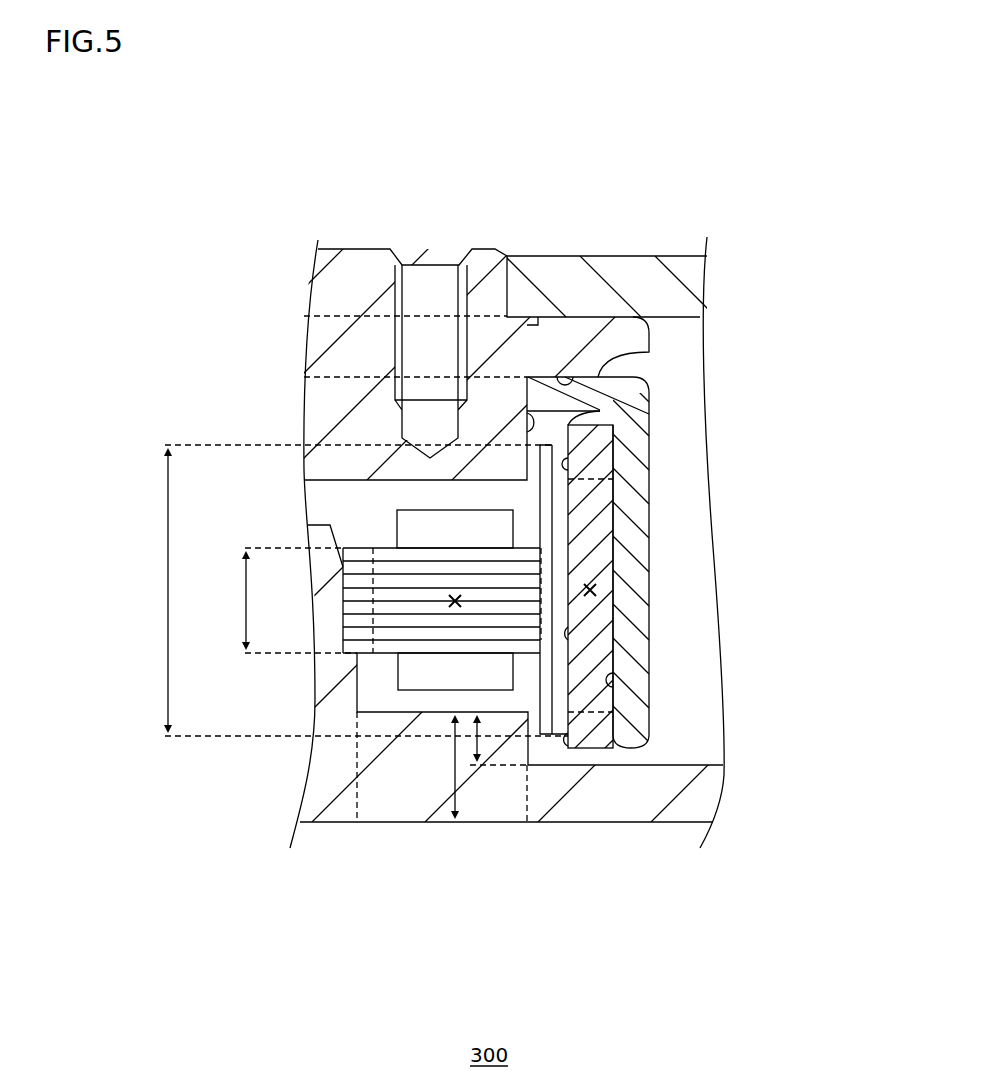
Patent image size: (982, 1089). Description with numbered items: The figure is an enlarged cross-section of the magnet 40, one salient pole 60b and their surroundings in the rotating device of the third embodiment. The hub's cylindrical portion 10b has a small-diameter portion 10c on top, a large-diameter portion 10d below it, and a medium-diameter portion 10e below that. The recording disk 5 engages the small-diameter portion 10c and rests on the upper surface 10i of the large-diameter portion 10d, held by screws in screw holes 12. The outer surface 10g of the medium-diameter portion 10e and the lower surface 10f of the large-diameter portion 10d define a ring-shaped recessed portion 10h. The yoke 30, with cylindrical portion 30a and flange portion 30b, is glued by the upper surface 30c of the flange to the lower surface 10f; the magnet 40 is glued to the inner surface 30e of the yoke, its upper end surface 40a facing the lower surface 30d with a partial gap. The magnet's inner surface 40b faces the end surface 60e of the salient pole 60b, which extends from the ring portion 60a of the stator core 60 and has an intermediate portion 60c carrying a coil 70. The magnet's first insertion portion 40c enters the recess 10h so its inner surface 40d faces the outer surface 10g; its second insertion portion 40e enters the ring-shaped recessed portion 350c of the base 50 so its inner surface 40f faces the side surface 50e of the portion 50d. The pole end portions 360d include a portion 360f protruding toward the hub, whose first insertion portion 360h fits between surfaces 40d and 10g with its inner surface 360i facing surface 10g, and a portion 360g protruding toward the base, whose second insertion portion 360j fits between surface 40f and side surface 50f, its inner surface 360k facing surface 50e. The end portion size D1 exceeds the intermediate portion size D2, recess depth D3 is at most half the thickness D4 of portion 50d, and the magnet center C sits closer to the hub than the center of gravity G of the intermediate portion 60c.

The recording disk 5 is at (668, 272).
The cylindrical portion 10b is at (368, 335).
The small-diameter portion 10c is at (490, 290).
The large-diameter portion 10d is at (558, 335).
The medium-diameter portion 10e is at (520, 300).
The lower surface 10f is at (592, 322).
The outer surface 10g is at (397, 424).
The ring-shaped recessed portion 10h is at (582, 436).
The upper surface 10i is at (568, 345).
The screw hole 12 is at (437, 330).
The yoke 30 is at (640, 667).
The cylindrical portion 30a is at (632, 574).
The flange portion 30b is at (640, 372).
The upper surface 30c is at (649, 337).
The lower surface 30d is at (649, 398).
The inner surface 30e is at (613, 688).
The magnet 40 is at (553, 546).
The upper end surface 40a is at (612, 410).
The inner surface 40b is at (568, 634).
The first insertion portion 40c is at (555, 462).
The inner surface 40d is at (555, 478).
The second insertion portion 40e is at (560, 717).
The inner surface 40f is at (565, 740).
The base 50 is at (670, 800).
The portion 50d is at (400, 770).
The side surface 50e is at (527, 762).
The side surface 50f is at (535, 745).
The stator core 60 is at (372, 690).
The ring portion 60a is at (348, 645).
The salient pole 60b is at (540, 968).
The intermediate portion 60c is at (513, 715).
The end surface 60e is at (553, 609).
The coil 70 is at (412, 690).
The ring-shaped recessed portion 350c is at (565, 742).
The end portion 360d is at (520, 760).
The portion 360f is at (547, 517).
The portion 360g is at (516, 750).
The first insertion portion 360h is at (540, 464).
The inner surface 360i is at (538, 478).
The second insertion portion 360j is at (555, 738).
The inner surface 360k is at (545, 725).
The center C is at (596, 591).
The center of gravity G is at (456, 745).
The size D1 is at (164, 565).
The size D2 is at (241, 595).
The depth D3 is at (455, 825).
The thickness D4 is at (477, 770).